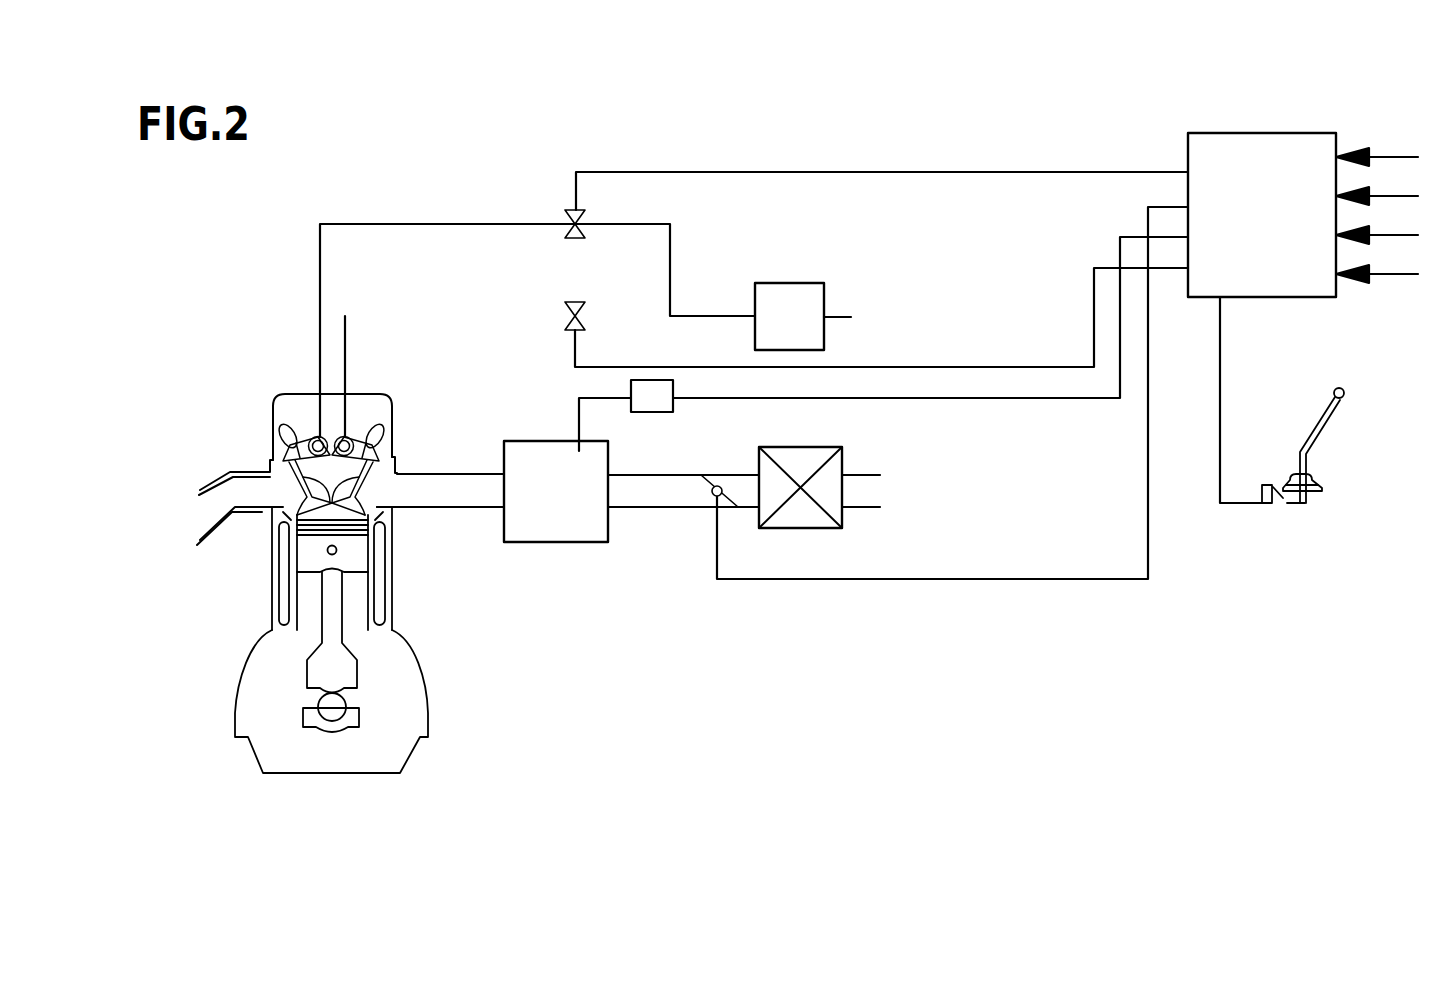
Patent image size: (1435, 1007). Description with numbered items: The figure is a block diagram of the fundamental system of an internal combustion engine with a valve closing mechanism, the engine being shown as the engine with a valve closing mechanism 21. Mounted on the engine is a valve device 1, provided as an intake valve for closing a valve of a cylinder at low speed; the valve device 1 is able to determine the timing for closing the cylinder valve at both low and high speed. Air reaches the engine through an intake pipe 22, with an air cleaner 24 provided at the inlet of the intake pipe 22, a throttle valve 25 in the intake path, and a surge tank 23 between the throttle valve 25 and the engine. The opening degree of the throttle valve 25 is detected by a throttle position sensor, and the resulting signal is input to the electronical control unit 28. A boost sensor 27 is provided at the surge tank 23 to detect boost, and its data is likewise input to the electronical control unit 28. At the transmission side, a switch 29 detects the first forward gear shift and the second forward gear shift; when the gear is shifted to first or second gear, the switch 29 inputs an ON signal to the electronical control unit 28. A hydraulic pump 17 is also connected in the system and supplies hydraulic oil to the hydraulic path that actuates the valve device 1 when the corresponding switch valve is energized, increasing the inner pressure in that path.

The valve device 1 is at (248, 450).
The hydraulic pump 17 is at (782, 283).
The engine with a valve closing mechanism 21 is at (472, 706).
The intake pipe 22 is at (657, 507).
The surge tank 23 is at (552, 542).
The air cleaner 24 is at (843, 493).
The throttle valve 25 is at (708, 500).
The boost sensor 27 is at (632, 381).
The electronical control unit 28 is at (1262, 133).
The switch 29 is at (1265, 504).